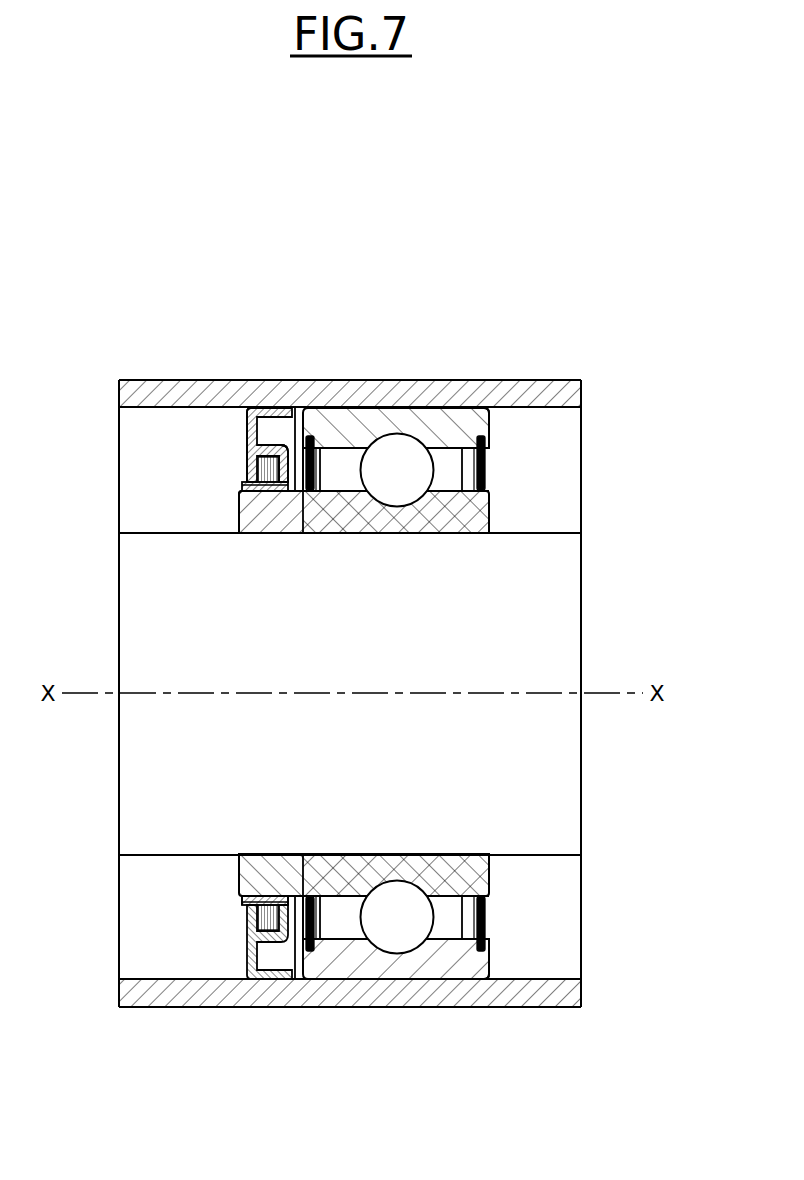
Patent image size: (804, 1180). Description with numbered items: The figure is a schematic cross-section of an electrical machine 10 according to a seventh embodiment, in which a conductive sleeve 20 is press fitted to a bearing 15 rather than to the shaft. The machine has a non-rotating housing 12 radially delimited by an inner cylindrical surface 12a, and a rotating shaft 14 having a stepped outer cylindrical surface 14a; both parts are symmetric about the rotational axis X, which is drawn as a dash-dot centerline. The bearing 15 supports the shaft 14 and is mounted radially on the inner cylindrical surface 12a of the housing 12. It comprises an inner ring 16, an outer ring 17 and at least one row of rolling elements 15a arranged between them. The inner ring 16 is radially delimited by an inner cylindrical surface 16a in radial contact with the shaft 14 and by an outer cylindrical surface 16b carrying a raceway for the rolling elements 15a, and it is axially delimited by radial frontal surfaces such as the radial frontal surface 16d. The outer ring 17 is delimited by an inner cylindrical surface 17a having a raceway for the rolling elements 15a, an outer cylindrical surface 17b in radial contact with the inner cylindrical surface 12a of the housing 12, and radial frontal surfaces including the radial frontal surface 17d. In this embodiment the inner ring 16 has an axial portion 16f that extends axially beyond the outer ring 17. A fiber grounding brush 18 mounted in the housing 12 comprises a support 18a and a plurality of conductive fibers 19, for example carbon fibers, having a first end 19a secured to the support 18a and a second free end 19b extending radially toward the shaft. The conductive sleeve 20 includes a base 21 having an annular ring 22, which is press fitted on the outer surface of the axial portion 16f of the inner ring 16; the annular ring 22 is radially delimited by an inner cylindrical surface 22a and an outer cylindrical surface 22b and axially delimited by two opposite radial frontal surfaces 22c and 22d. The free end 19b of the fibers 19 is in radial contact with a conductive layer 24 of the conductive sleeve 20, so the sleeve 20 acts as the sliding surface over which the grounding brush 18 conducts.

The electrical machine 10 is at (644, 300).
The housing 12 is at (571, 373).
The inner cylindrical surface 12a is at (150, 407).
The rotating shaft 14 is at (581, 606).
The outer cylindrical surface 14a is at (558, 855).
The bearing 15 is at (491, 647).
The rolling elements 15a is at (397, 694).
The inner ring 16 is at (492, 534).
The inner cylindrical surface 16a is at (405, 534).
The outer cylindrical surface 16b is at (490, 494).
The radial frontal surface 16d is at (480, 517).
The axial portion 16f is at (287, 512).
The outer ring 17 is at (445, 420).
The inner cylindrical surface 17a is at (490, 453).
The outer cylindrical surface 17b is at (382, 407).
The radial frontal surface 17d is at (489, 422).
The fiber grounding brush 18 is at (233, 464).
The support 18a is at (249, 440).
The conductive fibers 19 is at (266, 482).
The first end 19a is at (262, 468).
The second free end 19b is at (258, 491).
The conductive sleeve 20 is at (270, 496).
The base 21 is at (302, 895).
The annular ring 22 is at (278, 896).
The inner cylindrical surface 22a is at (257, 896).
The outer cylindrical surface 22b is at (247, 925).
The radial frontal surface 22c is at (243, 897).
The radial frontal surface 22d is at (296, 897).
The conductive layer 24 is at (265, 500).